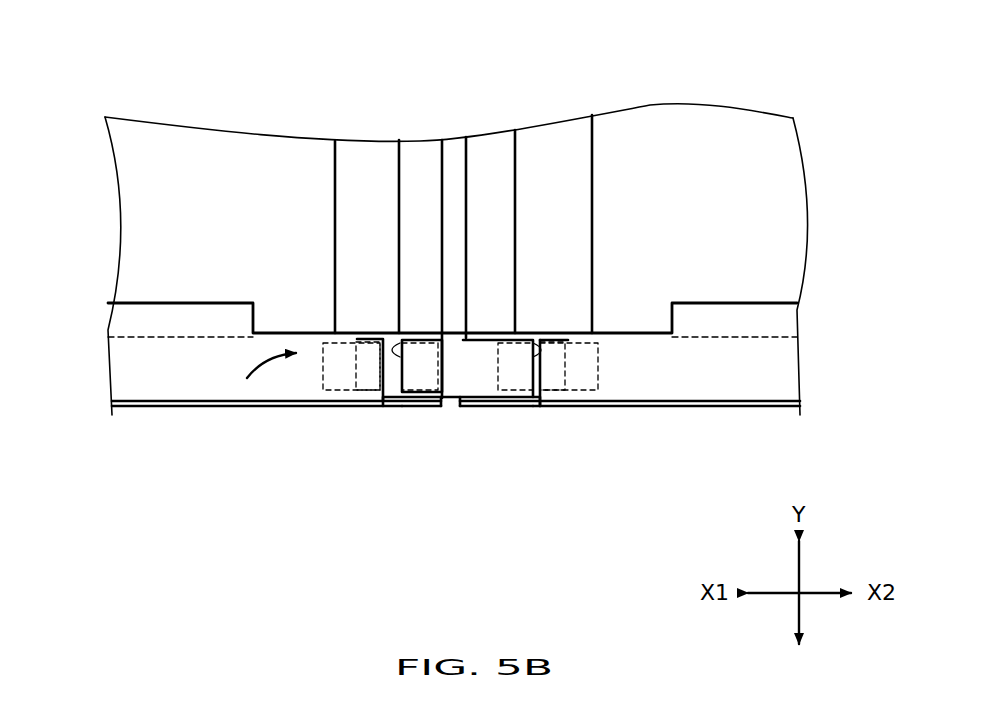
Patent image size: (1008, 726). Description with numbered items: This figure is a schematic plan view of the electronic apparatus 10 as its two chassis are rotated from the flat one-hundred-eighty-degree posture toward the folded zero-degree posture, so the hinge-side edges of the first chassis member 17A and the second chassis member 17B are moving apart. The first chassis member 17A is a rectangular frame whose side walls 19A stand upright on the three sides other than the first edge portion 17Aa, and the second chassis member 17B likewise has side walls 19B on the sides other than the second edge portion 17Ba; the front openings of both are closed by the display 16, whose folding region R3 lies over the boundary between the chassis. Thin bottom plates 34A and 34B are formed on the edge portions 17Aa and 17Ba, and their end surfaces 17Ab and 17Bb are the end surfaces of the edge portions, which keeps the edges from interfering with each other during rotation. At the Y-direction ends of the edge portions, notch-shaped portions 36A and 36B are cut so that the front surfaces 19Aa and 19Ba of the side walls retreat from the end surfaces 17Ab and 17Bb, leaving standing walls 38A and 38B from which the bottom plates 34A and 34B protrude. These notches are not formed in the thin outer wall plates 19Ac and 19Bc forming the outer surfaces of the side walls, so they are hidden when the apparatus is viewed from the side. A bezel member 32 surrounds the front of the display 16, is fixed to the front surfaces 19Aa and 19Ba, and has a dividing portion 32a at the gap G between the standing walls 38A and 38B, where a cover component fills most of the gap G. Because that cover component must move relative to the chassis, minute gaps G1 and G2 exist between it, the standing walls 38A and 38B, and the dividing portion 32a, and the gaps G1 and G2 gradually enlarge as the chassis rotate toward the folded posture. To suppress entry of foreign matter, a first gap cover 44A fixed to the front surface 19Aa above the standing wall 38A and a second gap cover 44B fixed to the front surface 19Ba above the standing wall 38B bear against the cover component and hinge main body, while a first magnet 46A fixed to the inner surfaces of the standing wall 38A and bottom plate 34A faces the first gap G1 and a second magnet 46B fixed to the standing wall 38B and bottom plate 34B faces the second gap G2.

The electronic apparatus 10 is at (97, 76).
The display 16 is at (686, 127).
The first chassis member 17A is at (345, 439).
The first edge portion 17Aa is at (417, 413).
The end surface 17Ab is at (450, 405).
The second chassis member 17B is at (603, 421).
The second edge portion 17Ba is at (505, 413).
The end surface 17Bb is at (457, 407).
The side wall 19A is at (281, 437).
The front surface of side wall 19Aa is at (118, 363).
The outer wall plate 19Ac is at (390, 403).
The side wall 19B is at (666, 423).
The front surface of side wall 19Ba is at (783, 363).
The outer wall plate 19Bc is at (543, 403).
The bezel member 32 is at (143, 390).
The dividing portion 32a is at (555, 202).
The gap G is at (518, 340).
The bottom plate 34A is at (428, 337).
The bottom plate 34B is at (473, 337).
The notch-shaped portion 36A is at (348, 200).
The standing wall 38A is at (398, 333).
The notch-shaped portion 36B is at (599, 184).
The standing wall 38B is at (527, 340).
The first gap cover 44A is at (328, 333).
The first magnet 46A is at (367, 330).
The second gap cover 44B is at (598, 330).
The second magnet 46B is at (553, 330).
The first gap G1 is at (400, 371).
The second gap G2 is at (533, 371).
The folding region R3 is at (454, 131).